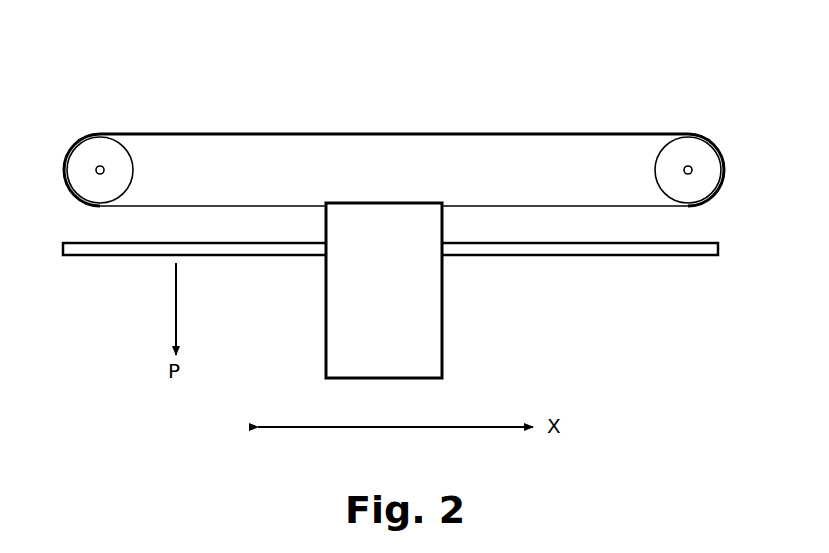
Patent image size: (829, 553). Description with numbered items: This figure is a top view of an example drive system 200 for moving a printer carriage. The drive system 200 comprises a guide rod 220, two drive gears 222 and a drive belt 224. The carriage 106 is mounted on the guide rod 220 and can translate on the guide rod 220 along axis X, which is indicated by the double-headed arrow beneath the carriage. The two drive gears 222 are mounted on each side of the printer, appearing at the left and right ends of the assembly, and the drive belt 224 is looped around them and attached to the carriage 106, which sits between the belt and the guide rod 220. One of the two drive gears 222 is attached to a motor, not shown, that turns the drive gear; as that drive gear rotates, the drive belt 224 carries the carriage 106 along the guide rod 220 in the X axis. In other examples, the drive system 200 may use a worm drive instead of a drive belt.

The drive system 200 is at (292, 70).
The drive belt 224 is at (551, 133).
The drive gears 222 is at (96, 146).
The guide rod 220 is at (627, 256).
The carriage 106 is at (403, 302).